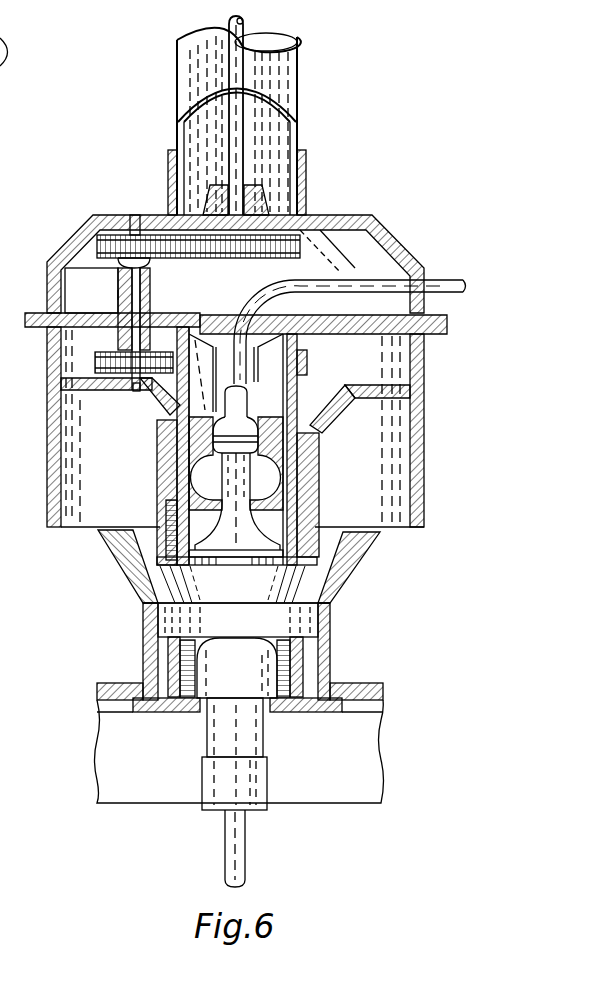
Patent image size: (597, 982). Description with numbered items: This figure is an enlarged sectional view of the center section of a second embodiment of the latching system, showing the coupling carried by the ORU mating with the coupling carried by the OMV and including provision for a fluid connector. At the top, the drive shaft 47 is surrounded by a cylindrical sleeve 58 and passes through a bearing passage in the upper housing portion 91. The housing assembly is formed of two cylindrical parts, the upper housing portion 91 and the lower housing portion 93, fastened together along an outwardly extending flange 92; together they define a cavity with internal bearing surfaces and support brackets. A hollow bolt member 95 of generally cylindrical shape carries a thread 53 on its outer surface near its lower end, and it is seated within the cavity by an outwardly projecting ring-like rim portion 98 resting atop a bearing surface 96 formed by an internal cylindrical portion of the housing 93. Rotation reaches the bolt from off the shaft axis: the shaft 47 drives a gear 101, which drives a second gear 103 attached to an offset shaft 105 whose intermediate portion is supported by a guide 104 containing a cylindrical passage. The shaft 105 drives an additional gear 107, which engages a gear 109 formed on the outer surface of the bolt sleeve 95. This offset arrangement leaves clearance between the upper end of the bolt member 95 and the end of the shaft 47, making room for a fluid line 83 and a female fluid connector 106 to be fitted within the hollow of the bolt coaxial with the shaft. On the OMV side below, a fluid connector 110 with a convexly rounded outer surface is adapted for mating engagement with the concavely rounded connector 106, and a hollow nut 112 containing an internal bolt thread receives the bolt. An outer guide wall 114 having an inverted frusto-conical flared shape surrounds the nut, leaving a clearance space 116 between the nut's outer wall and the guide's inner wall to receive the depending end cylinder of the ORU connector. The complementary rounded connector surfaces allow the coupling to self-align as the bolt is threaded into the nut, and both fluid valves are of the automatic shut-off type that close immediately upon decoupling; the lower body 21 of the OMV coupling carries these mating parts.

The cylindrical sleeve 58 is at (298, 96).
The drive shaft 47 is at (244, 150).
The upper housing portion 91 is at (385, 252).
The fluid line 83 is at (433, 282).
The second gear 103 is at (91, 290).
The guide 104 is at (118, 300).
The offset shaft 105 is at (150, 292).
The gear 101 is at (222, 258).
The outwardly extending flange 92 is at (38, 328).
The additional gear 107 is at (97, 365).
The gear on bolt sleeve 109 is at (308, 362).
The rim portion 98 is at (300, 413).
The lower housing portion 93 is at (424, 391).
The hollow bolt member 95 is at (170, 463).
The bearing surface 96 is at (319, 442).
The thread 53 is at (166, 522).
The female fluid connector 106 is at (224, 562).
The outer guide wall 114 is at (143, 608).
The hollow nut 112 is at (192, 648).
The valve body 21 is at (336, 655).
The clearance space 116 is at (166, 663).
The fluid connector 110 is at (245, 680).